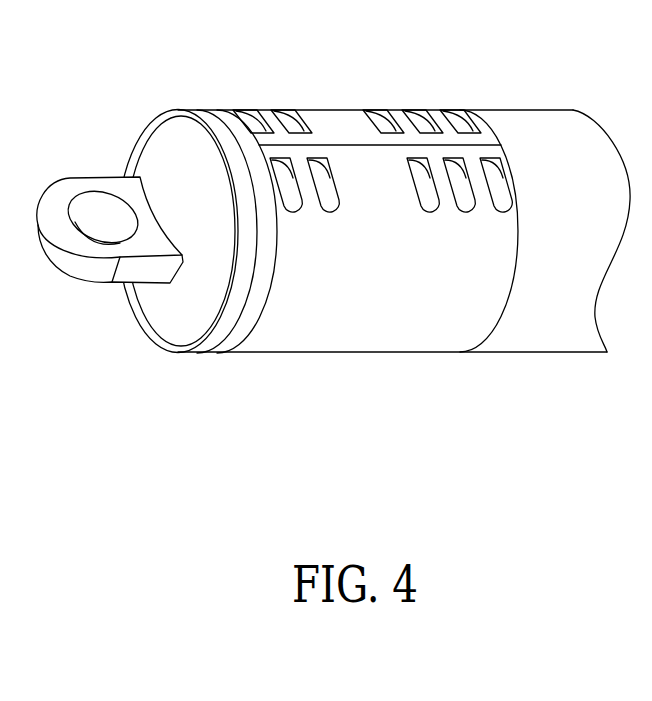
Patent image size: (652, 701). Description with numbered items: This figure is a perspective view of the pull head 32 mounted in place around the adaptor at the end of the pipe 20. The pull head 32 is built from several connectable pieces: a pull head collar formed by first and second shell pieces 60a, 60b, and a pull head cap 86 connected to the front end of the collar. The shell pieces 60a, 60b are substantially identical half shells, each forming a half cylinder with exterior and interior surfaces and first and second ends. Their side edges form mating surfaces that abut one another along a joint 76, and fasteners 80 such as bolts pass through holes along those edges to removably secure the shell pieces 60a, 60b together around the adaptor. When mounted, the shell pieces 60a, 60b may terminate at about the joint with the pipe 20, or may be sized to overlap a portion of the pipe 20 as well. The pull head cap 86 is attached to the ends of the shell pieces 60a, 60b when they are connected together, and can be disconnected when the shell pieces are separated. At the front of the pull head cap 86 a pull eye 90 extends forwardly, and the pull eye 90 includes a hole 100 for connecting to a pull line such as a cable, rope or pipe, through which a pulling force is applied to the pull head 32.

The pipe 20 is at (552, 128).
The pull head 32 is at (300, 327).
The first shell piece 60a is at (335, 102).
The second shell piece 60b is at (390, 327).
The joint 76 is at (372, 146).
The fasteners 80 is at (248, 116).
The pull head cap 86 is at (175, 320).
The pull eye 90 is at (77, 252).
The hole 100 is at (98, 237).